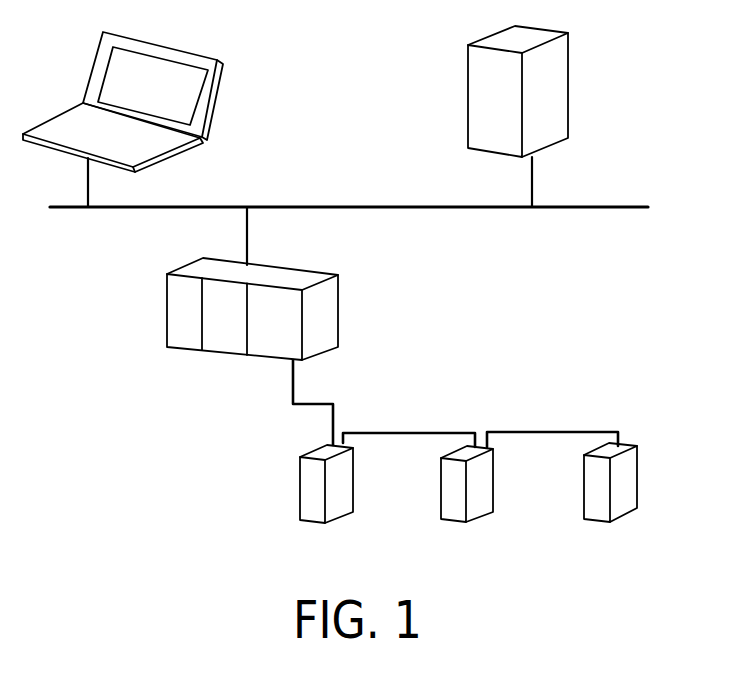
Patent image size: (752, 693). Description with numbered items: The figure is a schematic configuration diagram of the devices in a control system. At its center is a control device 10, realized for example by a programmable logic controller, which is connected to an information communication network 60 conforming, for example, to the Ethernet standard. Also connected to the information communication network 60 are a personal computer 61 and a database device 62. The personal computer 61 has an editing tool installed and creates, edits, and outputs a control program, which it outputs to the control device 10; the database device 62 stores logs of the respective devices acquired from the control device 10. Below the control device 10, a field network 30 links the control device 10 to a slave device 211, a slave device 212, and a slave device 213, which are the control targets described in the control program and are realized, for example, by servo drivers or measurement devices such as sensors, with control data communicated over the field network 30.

The control device 10 is at (317, 275).
The field network 30 is at (320, 403).
The information communication network 60 is at (633, 204).
The personal computer 61 is at (212, 58).
The database device 62 is at (538, 33).
The slave device 211 is at (303, 488).
The slave device 212 is at (443, 488).
The slave device 213 is at (593, 496).